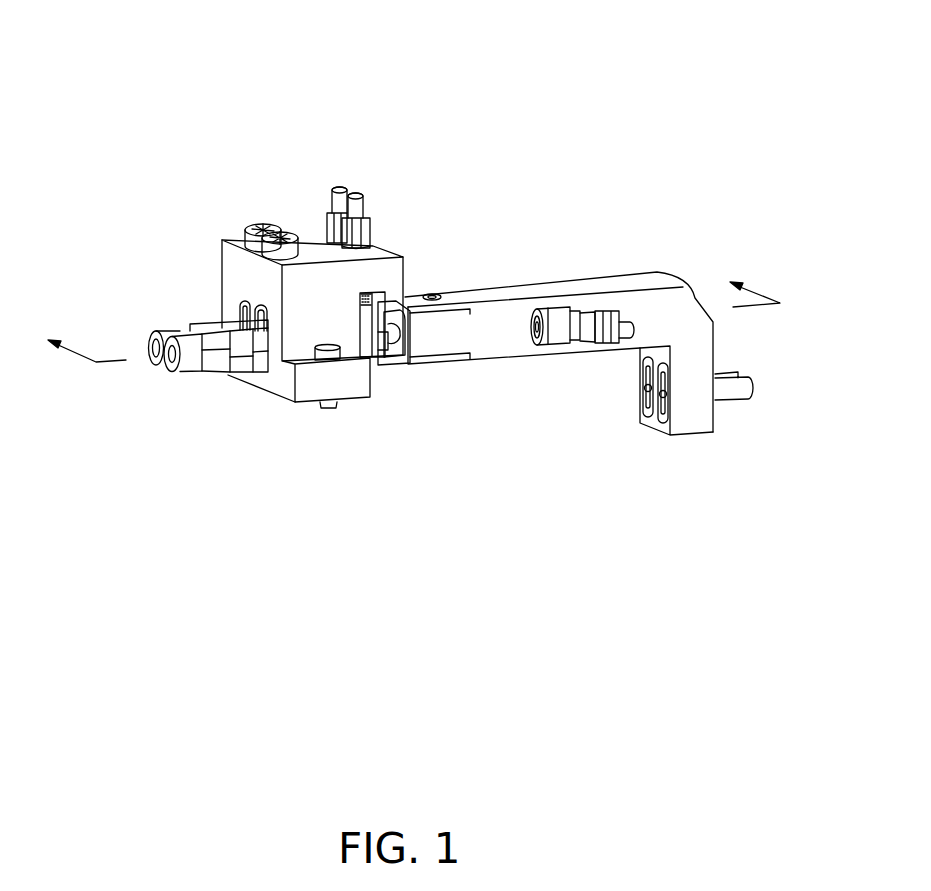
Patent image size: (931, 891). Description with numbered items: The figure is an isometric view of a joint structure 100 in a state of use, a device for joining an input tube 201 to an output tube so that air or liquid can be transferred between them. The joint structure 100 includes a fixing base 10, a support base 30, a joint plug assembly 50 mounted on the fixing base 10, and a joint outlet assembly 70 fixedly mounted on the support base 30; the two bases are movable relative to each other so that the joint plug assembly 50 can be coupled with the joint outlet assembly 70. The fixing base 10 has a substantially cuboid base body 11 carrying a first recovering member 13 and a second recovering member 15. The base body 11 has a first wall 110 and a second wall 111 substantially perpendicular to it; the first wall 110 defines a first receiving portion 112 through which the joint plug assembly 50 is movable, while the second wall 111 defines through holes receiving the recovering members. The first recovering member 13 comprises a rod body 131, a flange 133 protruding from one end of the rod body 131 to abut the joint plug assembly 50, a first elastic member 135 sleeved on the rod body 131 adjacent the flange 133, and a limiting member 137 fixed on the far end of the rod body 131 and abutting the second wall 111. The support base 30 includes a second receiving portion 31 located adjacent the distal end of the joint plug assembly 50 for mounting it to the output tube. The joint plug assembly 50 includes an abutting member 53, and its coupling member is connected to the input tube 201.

The joint structure 100 is at (389, 76).
The fixing base 10 is at (162, 140).
The base body 11 is at (225, 251).
The first recovering member 13 is at (322, 186).
The second recovering member 15 is at (247, 231).
The first wall 110 is at (232, 283).
The second wall 111 is at (311, 238).
The first receiving portion 112 is at (242, 303).
The rod body 131 is at (357, 204).
The flange 133 is at (366, 310).
The first elastic member 135 is at (372, 297).
The limiting member 137 is at (367, 226).
The support base 30 is at (557, 271).
The second receiving portion 31 is at (488, 351).
The joint plug assembly 50 is at (377, 366).
The abutting member 53 is at (240, 362).
The joint outlet assembly 70 is at (402, 367).
The input tube 201 is at (156, 372).